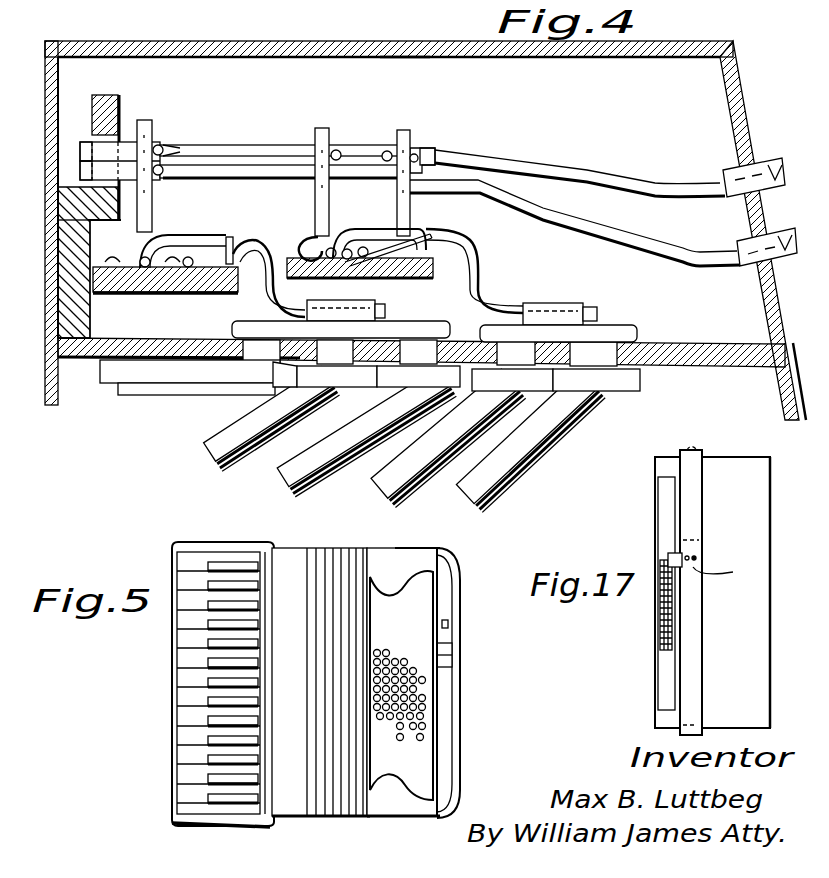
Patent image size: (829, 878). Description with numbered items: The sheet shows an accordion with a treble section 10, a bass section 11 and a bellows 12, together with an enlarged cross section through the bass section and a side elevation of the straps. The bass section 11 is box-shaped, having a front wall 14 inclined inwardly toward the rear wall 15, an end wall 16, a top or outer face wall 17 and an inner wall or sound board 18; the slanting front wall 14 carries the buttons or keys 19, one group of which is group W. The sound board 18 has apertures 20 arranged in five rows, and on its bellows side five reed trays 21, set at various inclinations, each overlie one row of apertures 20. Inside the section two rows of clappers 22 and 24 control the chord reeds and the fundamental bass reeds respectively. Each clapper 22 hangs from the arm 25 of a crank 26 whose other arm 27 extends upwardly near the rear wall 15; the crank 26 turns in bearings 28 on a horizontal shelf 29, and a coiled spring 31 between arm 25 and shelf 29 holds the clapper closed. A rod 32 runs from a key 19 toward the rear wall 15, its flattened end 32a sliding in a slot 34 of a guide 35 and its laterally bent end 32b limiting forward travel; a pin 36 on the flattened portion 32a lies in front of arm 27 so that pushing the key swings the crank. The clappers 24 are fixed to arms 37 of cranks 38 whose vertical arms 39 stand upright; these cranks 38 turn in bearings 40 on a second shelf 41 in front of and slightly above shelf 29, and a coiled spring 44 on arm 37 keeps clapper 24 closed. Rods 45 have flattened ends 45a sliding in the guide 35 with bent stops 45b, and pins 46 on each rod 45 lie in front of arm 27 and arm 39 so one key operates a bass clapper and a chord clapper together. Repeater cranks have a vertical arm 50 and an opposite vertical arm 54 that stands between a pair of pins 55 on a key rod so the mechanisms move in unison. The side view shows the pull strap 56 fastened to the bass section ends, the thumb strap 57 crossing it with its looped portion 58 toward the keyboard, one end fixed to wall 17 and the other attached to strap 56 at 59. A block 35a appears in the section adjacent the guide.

In FIG. 4, the treble section 10 is at (167, 203).
In FIG. 5, the treble section 10 is at (159, 686).
In FIG. 4, the bass section 11 is at (372, 222).
In FIG. 4, the bellows 12 is at (425, 170).
In FIG. 5, the bellows 12 is at (343, 553).
In FIG. 4, the front wall 14 is at (742, 93).
In FIG. 5, the front wall 14 is at (423, 610).
In FIG. 17, the front wall 14 is at (667, 683).
In FIG. 4, the rear wall 15 is at (47, 72).
In FIG. 17, the rear wall 15 is at (778, 638).
In FIG. 4, the end wall 16 is at (404, 58).
In FIG. 5, the end wall 16 is at (410, 547).
In FIG. 17, the end wall 16 is at (742, 452).
In FIG. 4, the top or outer face wall 17 is at (217, 42).
In FIG. 5, the top or outer face wall 17 is at (448, 758).
In FIG. 17, the top or outer face wall 17 is at (712, 592).
In FIG. 4, the sound board 18 is at (157, 347).
In FIG. 4, the buttons or keys 19 is at (768, 158).
In FIG. 5, the buttons or keys 19 is at (417, 702).
In FIG. 17, the buttons or keys 19 is at (667, 618).
In FIG. 4, the apertures 20 is at (430, 353).
In FIG. 4, the reed trays 21 is at (205, 442).
In FIG. 4, the clappers or valves 22 is at (402, 335).
In FIG. 4, the clappers or valves 24 is at (627, 327).
In FIG. 4, the arm 25 is at (260, 251).
In FIG. 4, the crank 26 is at (147, 270).
In FIG. 4, the arm 27 is at (143, 233).
In FIG. 4, the bearings 28 is at (125, 268).
In FIG. 4, the shelf 29 is at (223, 280).
In FIG. 4, the coiled spring 31 is at (192, 257).
In FIG. 4, the rod 32 is at (547, 222).
In FIG. 4, the flattened portion 32a is at (175, 170).
In FIG. 4, the laterally bent end 32b is at (80, 172).
In FIG. 4, the slot 34 is at (95, 140).
In FIG. 4, the guide 35 is at (147, 200).
In FIG. 4, the support block 35a is at (100, 97).
In FIG. 4, the pin 36 is at (150, 178).
In FIG. 4, the arm 37 is at (505, 313).
In FIG. 4, the crank 38 is at (310, 242).
In FIG. 4, the arm 39 is at (317, 127).
In FIG. 4, the bearings 40 is at (278, 262).
In FIG. 4, the shelf 41 is at (373, 272).
In FIG. 4, the coiled spring 44 is at (428, 228).
In FIG. 4, the rod 45 is at (545, 168).
In FIG. 4, the flattened portion 45a is at (168, 147).
In FIG. 4, the stop 45b is at (80, 147).
In FIG. 4, the pin 46 is at (155, 146).
In FIG. 4, the vertical arm 50 is at (393, 132).
In FIG. 4, the vertical arm 54 is at (430, 228).
In FIG. 4, the pins 55 is at (435, 150).
In FIG. 5, the pull strap 56 is at (457, 723).
In FIG. 17, the pull strap 56 is at (695, 493).
In FIG. 5, the thumb strap 57 is at (447, 650).
In FIG. 17, the thumb strap 57 is at (726, 562).
In FIG. 17, the looped portion 58 is at (667, 557).
In FIG. 17, the attachment 59 is at (700, 557).
In FIG. 4, the group W is at (739, 275).